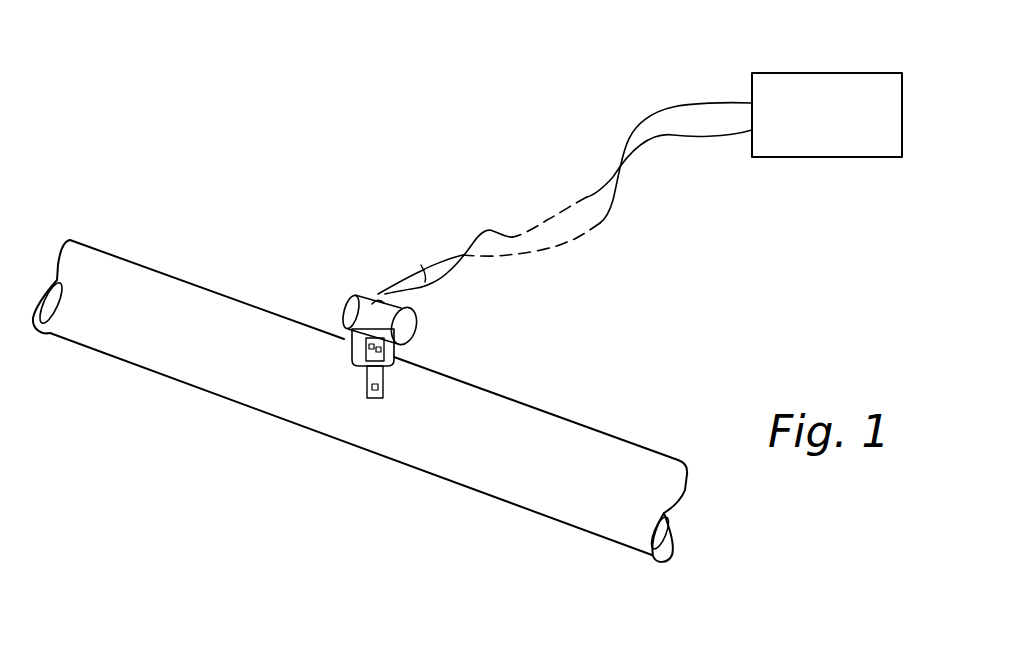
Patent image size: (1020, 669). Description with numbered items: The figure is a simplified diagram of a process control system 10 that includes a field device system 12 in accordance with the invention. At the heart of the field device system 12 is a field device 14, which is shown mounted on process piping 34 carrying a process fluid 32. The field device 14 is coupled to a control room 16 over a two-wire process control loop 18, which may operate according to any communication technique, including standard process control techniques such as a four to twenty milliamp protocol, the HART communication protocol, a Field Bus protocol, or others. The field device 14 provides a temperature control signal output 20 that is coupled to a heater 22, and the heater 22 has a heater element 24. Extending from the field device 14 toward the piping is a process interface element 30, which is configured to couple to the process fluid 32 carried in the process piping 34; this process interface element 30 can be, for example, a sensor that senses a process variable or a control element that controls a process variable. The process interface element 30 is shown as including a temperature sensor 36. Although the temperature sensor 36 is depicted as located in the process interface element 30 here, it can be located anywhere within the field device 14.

The process control system 10 is at (308, 106).
The field device system 12 is at (368, 226).
The field device 14 is at (346, 292).
The control room 16 is at (797, 157).
The two-wire process control loop 18 is at (433, 272).
The temperature control signal output 20 is at (356, 341).
The heater 22 is at (394, 351).
The heater element 24 is at (386, 327).
The process interface element 30 is at (384, 386).
The process fluid 32 is at (214, 344).
The process piping 34 is at (218, 396).
The temperature sensor 36 is at (373, 399).